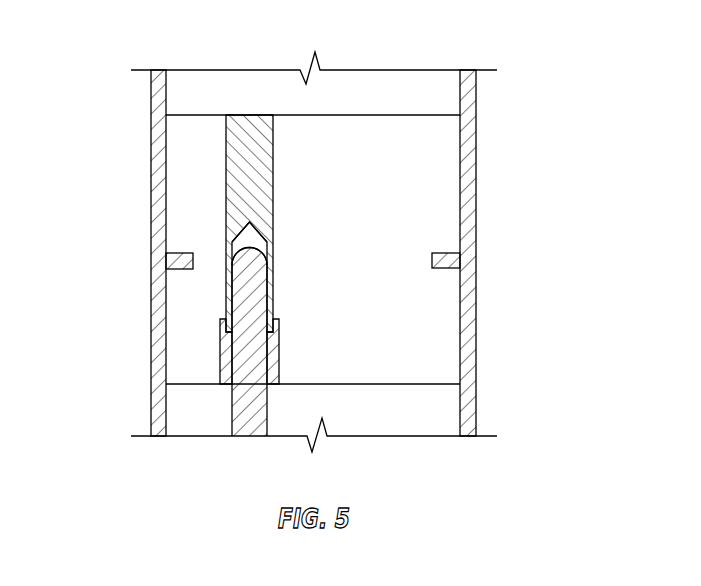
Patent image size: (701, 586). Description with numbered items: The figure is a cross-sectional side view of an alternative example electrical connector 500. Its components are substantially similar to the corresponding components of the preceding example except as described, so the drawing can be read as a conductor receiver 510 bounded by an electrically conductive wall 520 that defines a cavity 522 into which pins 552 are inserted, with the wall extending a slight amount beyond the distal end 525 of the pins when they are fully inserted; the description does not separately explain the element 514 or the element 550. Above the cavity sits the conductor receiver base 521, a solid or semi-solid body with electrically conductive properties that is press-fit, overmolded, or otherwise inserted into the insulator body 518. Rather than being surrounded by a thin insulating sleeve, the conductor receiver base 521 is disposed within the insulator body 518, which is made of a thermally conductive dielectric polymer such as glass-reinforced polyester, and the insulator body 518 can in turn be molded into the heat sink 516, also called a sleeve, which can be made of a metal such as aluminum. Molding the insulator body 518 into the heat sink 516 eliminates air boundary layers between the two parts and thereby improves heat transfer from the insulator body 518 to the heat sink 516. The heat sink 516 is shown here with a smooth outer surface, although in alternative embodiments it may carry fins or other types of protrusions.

The electrical connector 500 is at (130, 50).
The housing top plate 510 is at (318, 112).
The flange 514 is at (450, 258).
The heat sink 516 is at (344, 253).
The insulator body 518 is at (458, 194).
The plunger 520 is at (277, 311).
The conductor receiver base 521 is at (268, 156).
The conical cavity 522 is at (250, 232).
The rounded tip 525 is at (252, 263).
The plunger assembly 550 is at (249, 433).
The plunger rod 552 is at (268, 420).